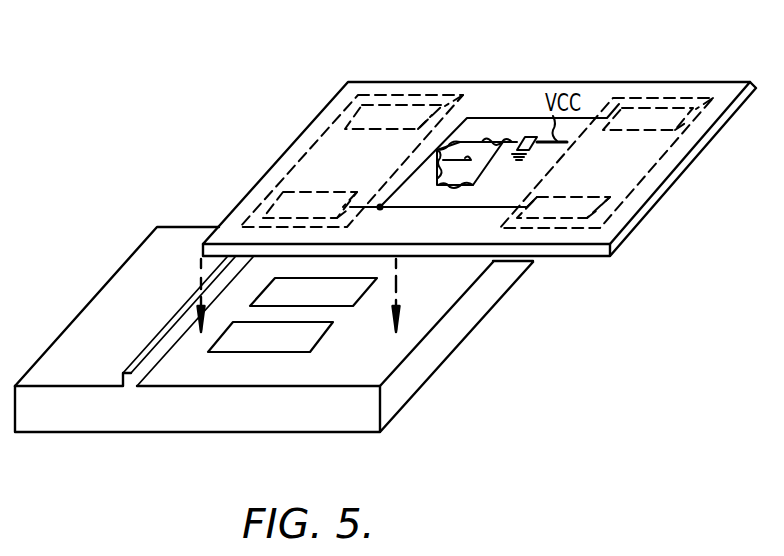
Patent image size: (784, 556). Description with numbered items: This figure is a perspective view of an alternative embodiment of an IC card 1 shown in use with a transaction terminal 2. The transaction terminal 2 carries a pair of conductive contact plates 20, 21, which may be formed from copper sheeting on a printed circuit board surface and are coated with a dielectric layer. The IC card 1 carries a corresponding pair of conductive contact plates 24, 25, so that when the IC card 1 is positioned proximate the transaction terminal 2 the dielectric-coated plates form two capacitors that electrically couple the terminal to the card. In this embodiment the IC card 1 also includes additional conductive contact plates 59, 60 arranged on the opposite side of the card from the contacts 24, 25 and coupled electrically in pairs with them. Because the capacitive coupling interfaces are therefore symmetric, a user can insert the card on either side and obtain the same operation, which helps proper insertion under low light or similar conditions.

The IC card 1 is at (347, 80).
The transaction terminal 2 is at (437, 360).
The conductive contact plate 20 is at (323, 293).
The conductive contact plate 21 is at (237, 337).
The conductive contact plate 24 is at (411, 100).
The conductive contact plate 25 is at (284, 190).
The additional conductive contact plate 59 is at (613, 212).
The additional conductive contact plate 60 is at (657, 113).